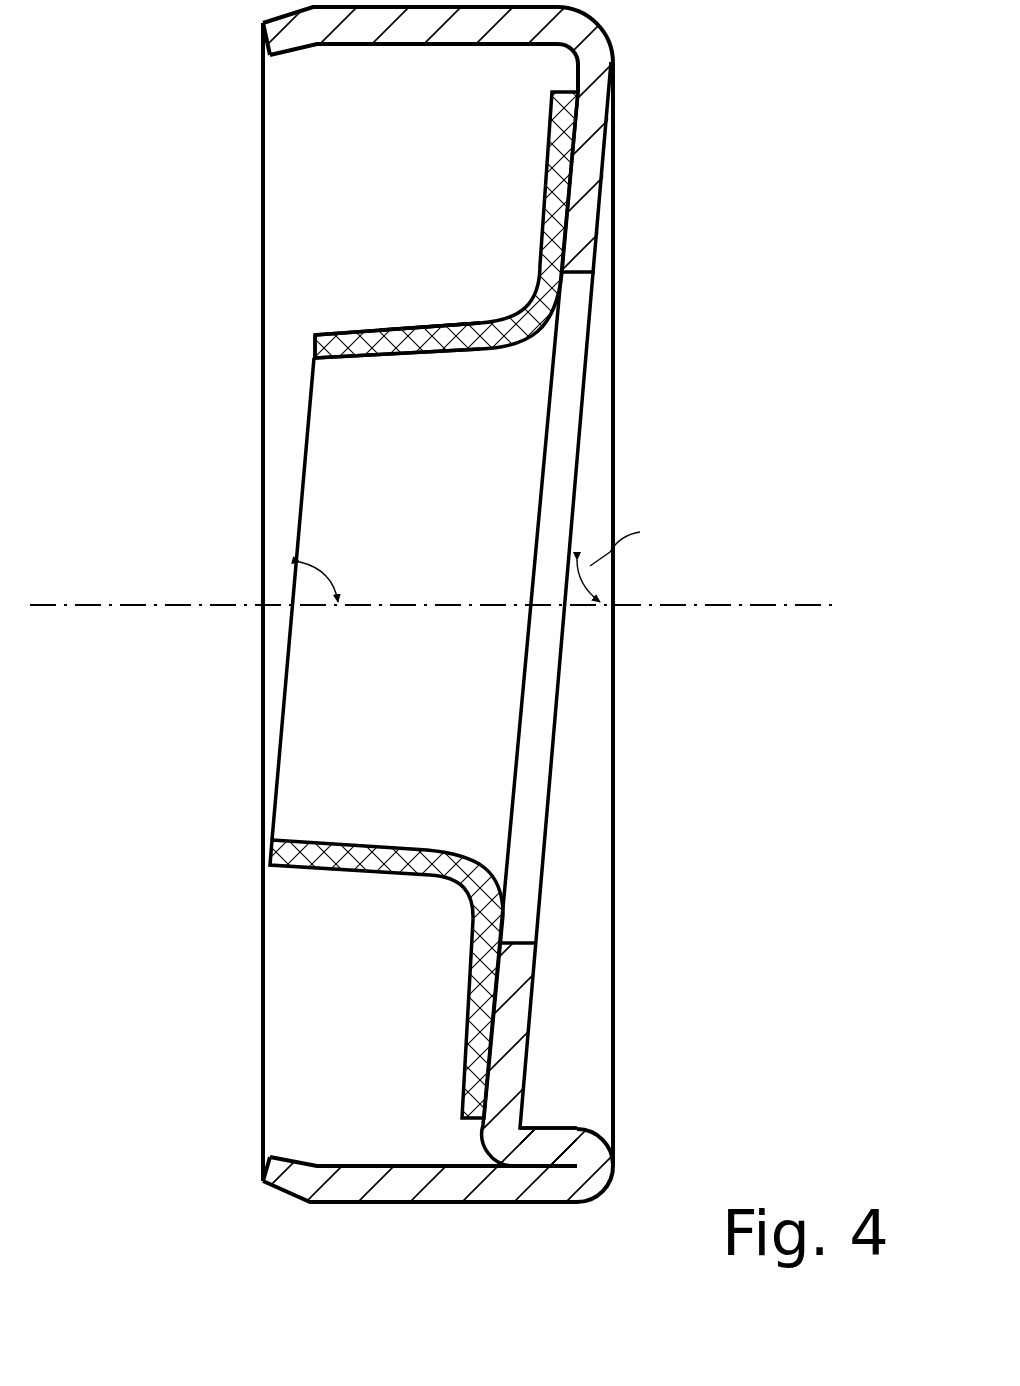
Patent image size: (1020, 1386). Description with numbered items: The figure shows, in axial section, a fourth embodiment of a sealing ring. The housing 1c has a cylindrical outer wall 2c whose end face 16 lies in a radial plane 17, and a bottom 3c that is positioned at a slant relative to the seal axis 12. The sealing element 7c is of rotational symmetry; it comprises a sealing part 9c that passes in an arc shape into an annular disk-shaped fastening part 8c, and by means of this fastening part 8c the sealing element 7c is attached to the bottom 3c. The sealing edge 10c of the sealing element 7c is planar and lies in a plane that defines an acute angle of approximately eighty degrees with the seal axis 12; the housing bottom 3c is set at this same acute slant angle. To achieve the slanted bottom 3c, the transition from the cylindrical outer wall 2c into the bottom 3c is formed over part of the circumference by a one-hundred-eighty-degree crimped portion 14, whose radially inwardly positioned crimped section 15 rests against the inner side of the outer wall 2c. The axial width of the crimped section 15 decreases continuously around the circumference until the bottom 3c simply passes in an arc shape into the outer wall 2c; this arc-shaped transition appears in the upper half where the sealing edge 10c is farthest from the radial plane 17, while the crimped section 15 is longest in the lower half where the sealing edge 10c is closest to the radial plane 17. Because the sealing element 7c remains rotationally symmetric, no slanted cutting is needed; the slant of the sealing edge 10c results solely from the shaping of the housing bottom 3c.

The housing 1c is at (419, 641).
The cylindrical outer wall 2c is at (498, 1162).
The bottom 3c is at (598, 614).
The sealing element 7c is at (404, 304).
The fastening part 8c is at (506, 270).
The sealing part 9c is at (365, 345).
The sealing edge 10c is at (282, 672).
The seal axis 12 is at (733, 605).
The crimped portion 14 is at (587, 1160).
The crimped section 15 is at (553, 1152).
The end face 16 is at (263, 32).
The radial plane 17 is at (263, 263).